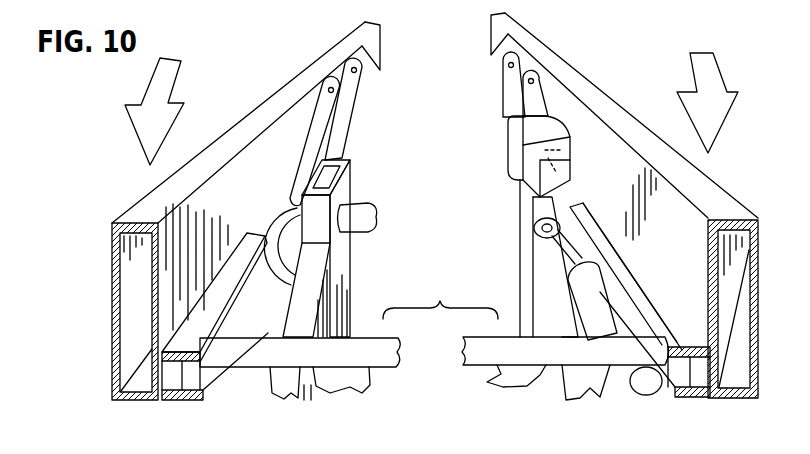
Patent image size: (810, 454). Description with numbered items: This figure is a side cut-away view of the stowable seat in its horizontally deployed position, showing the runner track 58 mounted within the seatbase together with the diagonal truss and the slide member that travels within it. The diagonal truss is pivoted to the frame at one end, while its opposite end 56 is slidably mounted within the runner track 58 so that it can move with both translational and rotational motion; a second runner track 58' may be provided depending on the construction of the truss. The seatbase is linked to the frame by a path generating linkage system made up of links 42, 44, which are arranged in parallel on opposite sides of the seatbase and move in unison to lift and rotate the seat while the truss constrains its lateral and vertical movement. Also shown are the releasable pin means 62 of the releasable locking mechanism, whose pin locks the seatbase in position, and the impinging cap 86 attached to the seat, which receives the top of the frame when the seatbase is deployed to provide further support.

The link 42 is at (352, 125).
The link 44 is at (503, 98).
The releasable pin means 62 is at (367, 197).
The impinging cap 86 is at (508, 158).
The runner track 58 is at (663, 274).
The second runner track 58' is at (161, 316).
The opposite end of the diagonal truss 56 is at (500, 370).